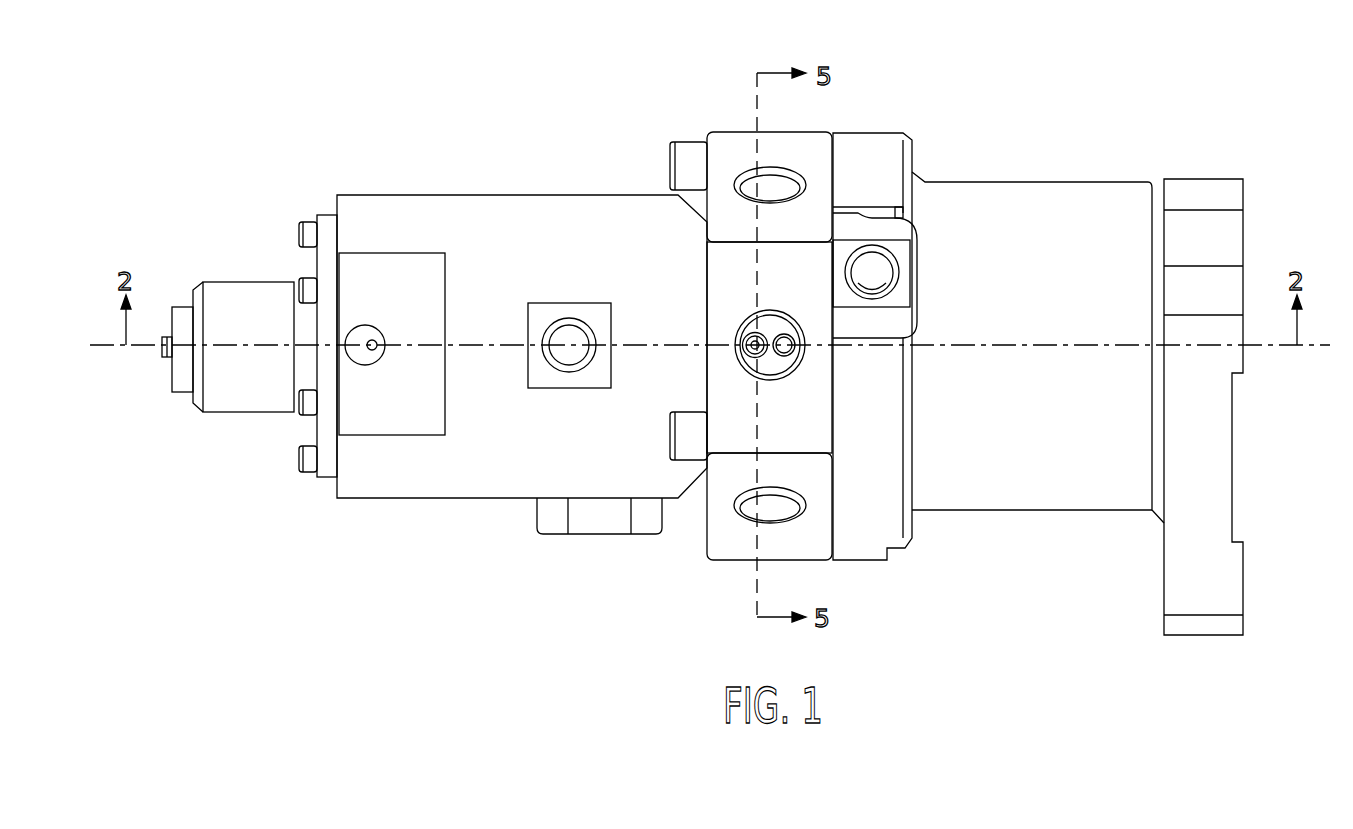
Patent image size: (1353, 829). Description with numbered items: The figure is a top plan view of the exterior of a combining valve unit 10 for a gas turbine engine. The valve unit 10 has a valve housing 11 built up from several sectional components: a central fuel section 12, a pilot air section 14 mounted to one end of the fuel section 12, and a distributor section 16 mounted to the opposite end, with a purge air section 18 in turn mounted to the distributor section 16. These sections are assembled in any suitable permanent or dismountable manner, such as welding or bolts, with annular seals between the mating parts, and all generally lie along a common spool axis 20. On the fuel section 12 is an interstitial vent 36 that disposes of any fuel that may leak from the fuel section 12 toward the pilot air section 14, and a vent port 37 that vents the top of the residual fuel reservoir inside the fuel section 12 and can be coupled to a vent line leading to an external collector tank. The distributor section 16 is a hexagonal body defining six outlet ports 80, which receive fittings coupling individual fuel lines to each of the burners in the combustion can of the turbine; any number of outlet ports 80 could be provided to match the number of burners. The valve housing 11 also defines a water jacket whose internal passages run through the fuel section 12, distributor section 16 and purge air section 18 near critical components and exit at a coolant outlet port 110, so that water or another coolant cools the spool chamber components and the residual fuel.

The combining valve unit 10 is at (948, 73).
The valve housing 11 is at (1024, 177).
The fuel section 12 is at (513, 195).
The pilot air section 14 is at (250, 282).
The distributor section 16 is at (782, 132).
The purge air section 18 is at (1092, 190).
The spool axis 20 is at (1318, 348).
The interstitial vent 36 is at (378, 326).
The vent port 37 is at (570, 318).
The outlet ports 80 is at (800, 182).
The coolant outlet port 110 is at (897, 262).